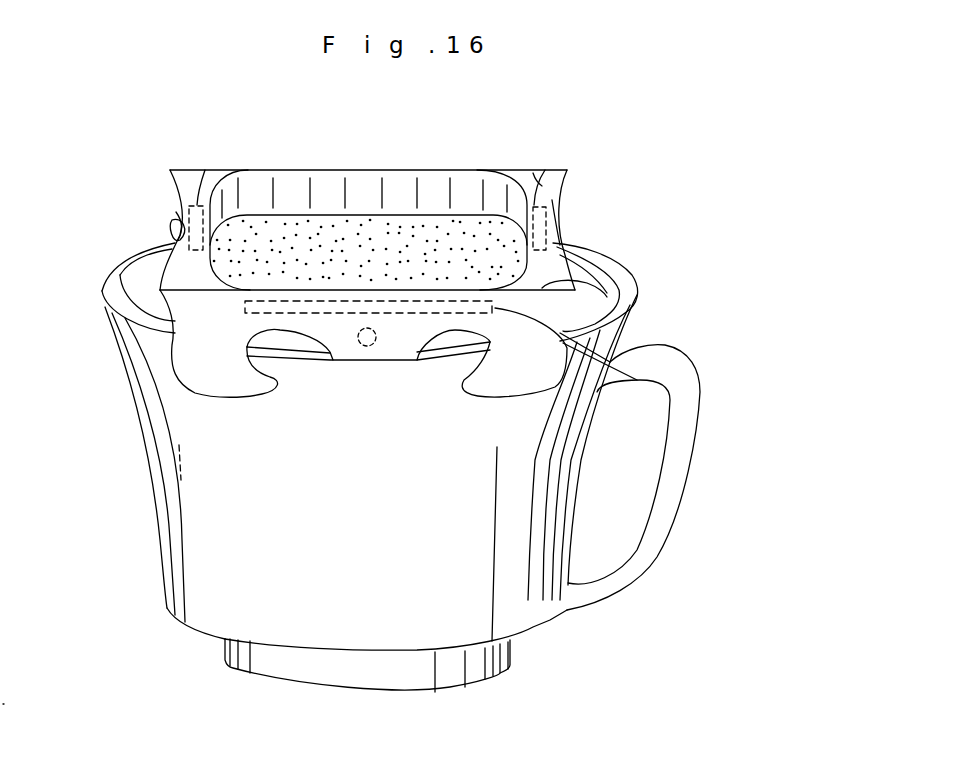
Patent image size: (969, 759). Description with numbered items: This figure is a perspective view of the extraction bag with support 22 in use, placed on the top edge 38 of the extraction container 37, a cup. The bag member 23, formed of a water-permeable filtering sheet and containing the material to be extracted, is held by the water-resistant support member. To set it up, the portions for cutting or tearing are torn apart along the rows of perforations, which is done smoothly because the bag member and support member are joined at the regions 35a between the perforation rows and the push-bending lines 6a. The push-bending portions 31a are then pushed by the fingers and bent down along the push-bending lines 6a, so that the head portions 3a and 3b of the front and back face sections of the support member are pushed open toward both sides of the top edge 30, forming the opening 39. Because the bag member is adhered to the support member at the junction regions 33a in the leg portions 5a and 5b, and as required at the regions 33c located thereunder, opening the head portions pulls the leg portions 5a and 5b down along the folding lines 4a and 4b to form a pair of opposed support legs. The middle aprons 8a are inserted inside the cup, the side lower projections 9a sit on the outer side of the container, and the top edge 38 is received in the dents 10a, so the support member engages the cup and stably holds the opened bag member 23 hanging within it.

The extraction bag with support 22 is at (552, 162).
The head portion 3b is at (545, 183).
The folding line 4b is at (540, 185).
The opening 39 is at (368, 190).
The region 35a is at (207, 195).
The push-bending line 6a is at (197, 203).
The leg portion 5b is at (174, 216).
The top edge 30 is at (189, 223).
The push-bending portion 31a is at (548, 241).
The bag member 23 is at (610, 253).
The folding line 4a is at (557, 283).
The head portion 3a is at (533, 308).
The leg portion 5a is at (600, 316).
The top edge of the extraction container 38 is at (112, 283).
The extraction container 37 is at (178, 433).
The junction region 33a is at (672, 393).
The side lower projection 9a is at (222, 380).
The dent 10a is at (290, 343).
The middle apron 8a is at (372, 347).
The junction region 33c is at (358, 346).